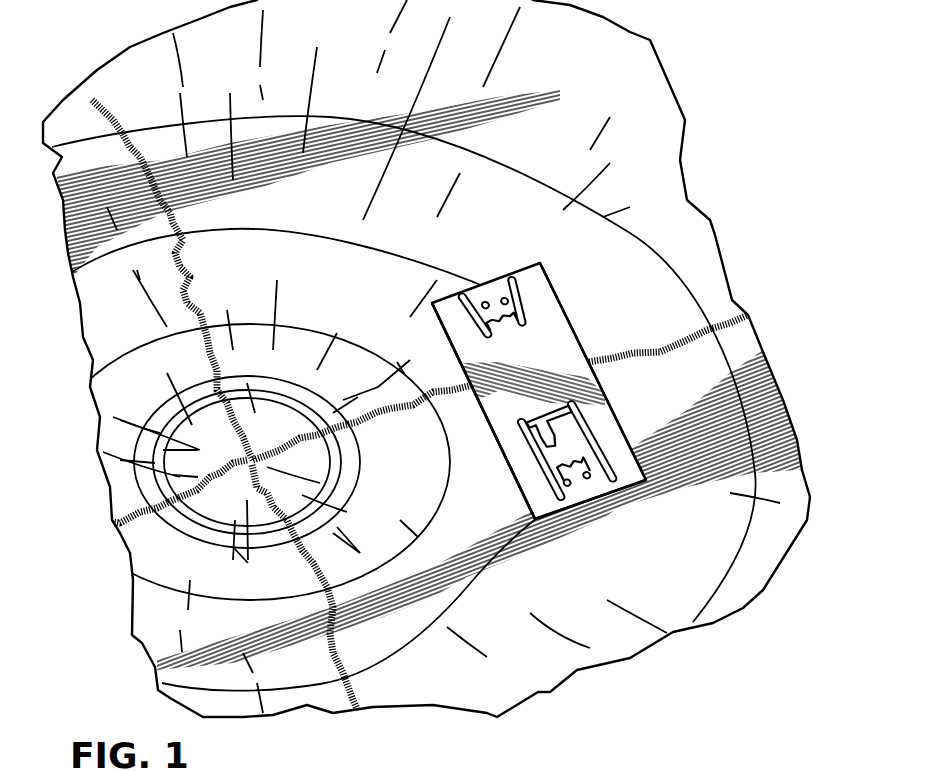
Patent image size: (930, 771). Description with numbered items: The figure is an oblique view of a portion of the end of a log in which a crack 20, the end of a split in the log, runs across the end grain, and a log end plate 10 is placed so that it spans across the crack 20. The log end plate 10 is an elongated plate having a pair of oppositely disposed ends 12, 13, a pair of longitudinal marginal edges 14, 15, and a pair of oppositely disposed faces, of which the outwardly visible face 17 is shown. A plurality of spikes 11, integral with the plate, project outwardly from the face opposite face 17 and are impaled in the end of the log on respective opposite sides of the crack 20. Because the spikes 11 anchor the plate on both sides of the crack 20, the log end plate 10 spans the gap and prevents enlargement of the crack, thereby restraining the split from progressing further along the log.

The log end plate 10 is at (561, 271).
The spikes 11 is at (503, 449).
The end 12 is at (588, 500).
The end 13 is at (483, 292).
The longitudinal marginal edge 14 is at (496, 443).
The longitudinal marginal edge 15 is at (615, 417).
The face 17 is at (563, 352).
The crack 20 is at (300, 400).